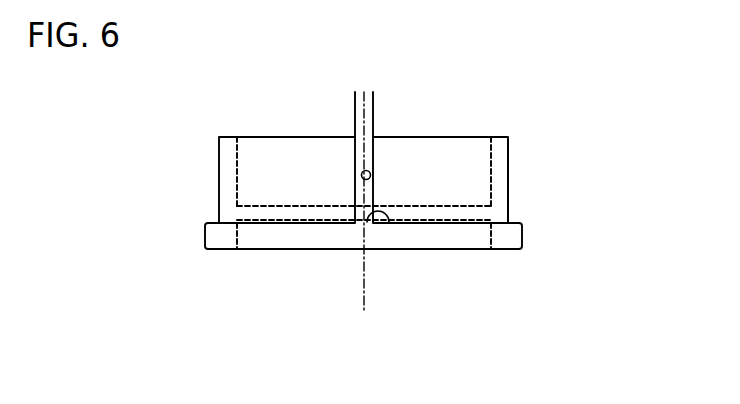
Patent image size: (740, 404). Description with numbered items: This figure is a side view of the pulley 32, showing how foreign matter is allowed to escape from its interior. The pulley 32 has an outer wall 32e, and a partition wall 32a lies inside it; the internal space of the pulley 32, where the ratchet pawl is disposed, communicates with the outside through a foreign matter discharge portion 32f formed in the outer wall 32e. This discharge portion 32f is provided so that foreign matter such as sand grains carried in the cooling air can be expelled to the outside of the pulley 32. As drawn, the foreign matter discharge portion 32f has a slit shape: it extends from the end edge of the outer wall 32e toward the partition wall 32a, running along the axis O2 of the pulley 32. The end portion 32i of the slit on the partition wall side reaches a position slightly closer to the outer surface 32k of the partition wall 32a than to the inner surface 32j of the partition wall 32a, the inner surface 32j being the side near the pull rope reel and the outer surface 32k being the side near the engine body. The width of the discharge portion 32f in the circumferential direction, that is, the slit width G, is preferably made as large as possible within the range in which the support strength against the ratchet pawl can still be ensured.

The pulley 32 is at (219, 183).
The inner surface of the partition wall 32j is at (290, 206).
The partition wall 32a is at (455, 218).
The outer surface of the partition wall 32k is at (302, 224).
The foreign matter discharge portion 32f is at (375, 183).
The outer wall 32e is at (505, 152).
The end portion of the foreign matter discharge portion 32i is at (389, 222).
The slit width G is at (398, 101).
The axis of the pulley O2 is at (363, 267).